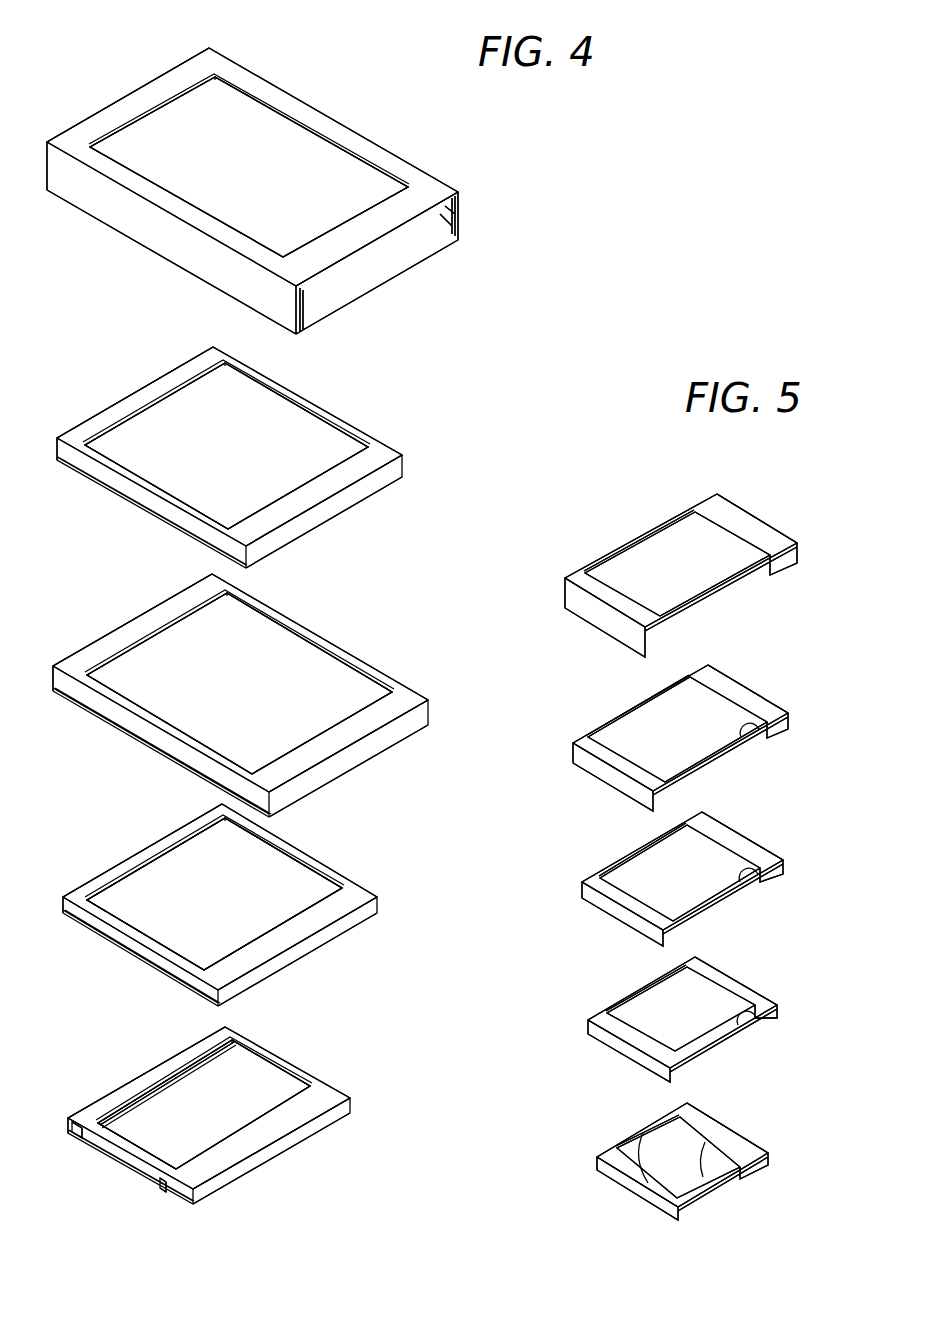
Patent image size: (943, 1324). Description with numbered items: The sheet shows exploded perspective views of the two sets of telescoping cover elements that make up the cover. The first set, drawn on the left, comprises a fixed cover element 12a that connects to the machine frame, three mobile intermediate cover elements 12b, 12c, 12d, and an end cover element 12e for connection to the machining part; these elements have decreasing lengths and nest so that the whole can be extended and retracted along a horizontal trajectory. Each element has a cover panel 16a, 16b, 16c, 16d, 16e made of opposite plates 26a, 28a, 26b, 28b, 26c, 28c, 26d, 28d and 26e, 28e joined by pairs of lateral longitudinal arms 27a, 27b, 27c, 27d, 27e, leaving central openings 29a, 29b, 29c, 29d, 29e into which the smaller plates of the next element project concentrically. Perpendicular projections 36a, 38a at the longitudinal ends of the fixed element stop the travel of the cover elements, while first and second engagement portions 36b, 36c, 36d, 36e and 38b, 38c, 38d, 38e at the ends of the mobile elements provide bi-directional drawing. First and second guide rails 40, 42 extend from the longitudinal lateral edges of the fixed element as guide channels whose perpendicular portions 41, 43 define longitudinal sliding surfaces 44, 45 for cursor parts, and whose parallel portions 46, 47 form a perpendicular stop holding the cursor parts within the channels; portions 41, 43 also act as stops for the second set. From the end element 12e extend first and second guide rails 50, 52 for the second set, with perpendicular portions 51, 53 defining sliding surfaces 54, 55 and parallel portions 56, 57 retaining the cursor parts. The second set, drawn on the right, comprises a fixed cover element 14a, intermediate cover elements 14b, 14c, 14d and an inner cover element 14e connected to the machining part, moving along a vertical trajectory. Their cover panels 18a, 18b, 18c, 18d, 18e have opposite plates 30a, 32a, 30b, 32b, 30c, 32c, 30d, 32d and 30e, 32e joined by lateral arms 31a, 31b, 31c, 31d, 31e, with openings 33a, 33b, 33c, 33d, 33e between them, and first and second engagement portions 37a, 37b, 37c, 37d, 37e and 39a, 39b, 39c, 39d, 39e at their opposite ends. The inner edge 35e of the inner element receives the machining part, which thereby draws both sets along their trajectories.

In FIG. 4, the fixed cover element 12a is at (103, 237).
In FIG. 4, the mobile intermediate cover element 12b is at (115, 485).
In FIG. 4, the mobile intermediate cover element 12c is at (122, 718).
In FIG. 4, the mobile intermediate cover element 12d is at (115, 942).
In FIG. 4, the cover element for connection to the machining part 12e is at (317, 1142).
In FIG. 4, the cover panel 16a is at (415, 188).
In FIG. 4, the cover panel 16b is at (370, 458).
In FIG. 4, the cover panel 16c is at (392, 712).
In FIG. 4, the cover panel 16d is at (352, 892).
In FIG. 4, the cover panel 16e is at (320, 1097).
In FIG. 4, the plate 26a is at (180, 78).
In FIG. 4, the plate 26b is at (148, 397).
In FIG. 4, the plate 26c is at (177, 613).
In FIG. 4, the plate 26d is at (155, 855).
In FIG. 4, the plate 26e is at (188, 1058).
In FIG. 4, the lateral longitudinal arm 27a is at (148, 192).
In FIG. 4, the lateral longitudinal arm 27b is at (152, 487).
In FIG. 4, the lateral longitudinal arm 27c is at (157, 723).
In FIG. 4, the lateral longitudinal arm 27d is at (313, 863).
In FIG. 4, the lateral longitudinal arm 27e is at (257, 1052).
In FIG. 4, the plate 28a is at (368, 270).
In FIG. 4, the plate 28b is at (327, 480).
In FIG. 4, the plate 28c is at (310, 753).
In FIG. 4, the plate 28d is at (273, 937).
In FIG. 4, the plate 28e is at (288, 1117).
In FIG. 4, the opening 29a is at (232, 172).
In FIG. 4, the opening 29b is at (202, 413).
In FIG. 4, the opening 29c is at (252, 668).
In FIG. 4, the opening 29d is at (227, 863).
In FIG. 4, the opening 29e is at (253, 1085).
In FIG. 4, the perpendicular projection 36a is at (73, 152).
In FIG. 4, the first engagement portion 36b is at (58, 458).
In FIG. 4, the first engagement portion 36c is at (50, 687).
In FIG. 4, the first engagement portion 36d is at (63, 910).
In FIG. 4, the first engagement portion 36e is at (70, 1128).
In FIG. 4, the perpendicular projection 38a is at (362, 233).
In FIG. 4, the second engagement portion 38b is at (337, 503).
In FIG. 4, the second engagement portion 38c is at (382, 742).
In FIG. 4, the second engagement portion 38d is at (350, 918).
In FIG. 4, the second engagement portion 38e is at (350, 1107).
In FIG. 4, the first guide rail 40 is at (310, 333).
In FIG. 4, the perpendicular portion 41 is at (148, 228).
In FIG. 4, the second guide rail 42 is at (470, 233).
In FIG. 4, the perpendicular portion 43 is at (458, 215).
In FIG. 4, the longitudinal sliding surface 44 is at (313, 285).
In FIG. 4, the longitudinal sliding surface 45 is at (448, 218).
In FIG. 4, the stop portion 46 is at (302, 333).
In FIG. 4, the stop portion 47 is at (452, 247).
In FIG. 4, the first guide rail 50 is at (80, 1148).
In FIG. 4, the perpendicular portion 51 is at (77, 1140).
In FIG. 4, the second guide rail 52 is at (173, 1197).
In FIG. 4, the perpendicular portion 53 is at (145, 1153).
In FIG. 4, the longitudinal sliding surface 54 is at (108, 1125).
In FIG. 4, the longitudinal sliding surface 55 is at (158, 1182).
In FIG. 4, the retaining portion 56 is at (85, 1143).
In FIG. 4, the retaining portion 57 is at (163, 1193).
In FIG. 5, the fixed cover element 14a is at (623, 547).
In FIG. 5, the mobile intermediate cover element 14b is at (778, 697).
In FIG. 5, the mobile intermediate cover element 14c is at (600, 863).
In FIG. 5, the mobile intermediate cover element 14d is at (618, 1055).
In FIG. 5, the inner cover element 14e is at (595, 1175).
In FIG. 5, the cover panel 18a is at (723, 512).
In FIG. 5, the cover panel 18b is at (713, 675).
In FIG. 5, the cover panel 18c is at (715, 832).
In FIG. 5, the cover panel 18d is at (727, 987).
In FIG. 5, the cover panel 18e is at (723, 1132).
In FIG. 5, the plate 30a is at (600, 592).
In FIG. 5, the plate 30b is at (610, 755).
In FIG. 5, the plate 30c is at (605, 888).
In FIG. 5, the plate 30d is at (620, 1030).
In FIG. 5, the plate 30e is at (623, 1163).
In FIG. 5, the lateral arm 31a is at (648, 537).
In FIG. 5, the lateral arm 31b is at (637, 707).
In FIG. 5, the lateral arm 31c is at (625, 853).
In FIG. 5, the lateral arm 31d is at (653, 973).
In FIG. 5, the lateral arm 31e is at (667, 1120).
In FIG. 5, the plate 32a is at (745, 525).
In FIG. 5, the plate 32b is at (732, 697).
In FIG. 5, the plate 32c is at (742, 845).
In FIG. 5, the plate 32d is at (750, 997).
In FIG. 5, the plate 32e is at (748, 1145).
In FIG. 5, the opening 33a is at (675, 552).
In FIG. 5, the opening 33b is at (682, 730).
In FIG. 5, the opening 33c is at (685, 878).
In FIG. 5, the opening 33d is at (692, 997).
In FIG. 5, the opening 33e is at (708, 1172).
In FIG. 5, the inner edge 35e is at (648, 1183).
In FIG. 5, the first engagement portion 37a is at (585, 608).
In FIG. 5, the first engagement portion 37b is at (597, 767).
In FIG. 5, the first engagement portion 37c is at (600, 902).
In FIG. 5, the first engagement portion 37d is at (610, 1037).
In FIG. 5, the first engagement portion 37e is at (625, 1182).
In FIG. 5, the second engagement portion 39a is at (800, 552).
In FIG. 5, the second engagement portion 39b is at (783, 723).
In FIG. 5, the second engagement portion 39c is at (782, 867).
In FIG. 5, the second engagement portion 39d is at (778, 1020).
In FIG. 5, the second engagement portion 39e is at (763, 1158).